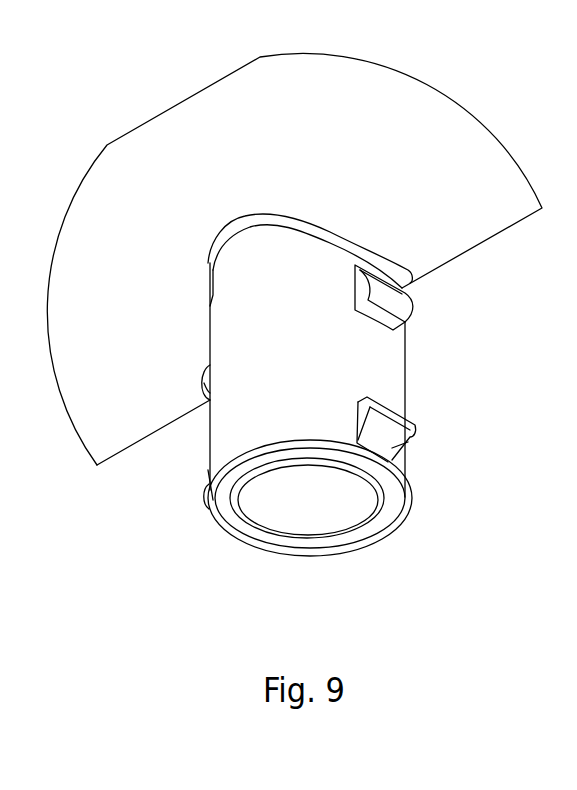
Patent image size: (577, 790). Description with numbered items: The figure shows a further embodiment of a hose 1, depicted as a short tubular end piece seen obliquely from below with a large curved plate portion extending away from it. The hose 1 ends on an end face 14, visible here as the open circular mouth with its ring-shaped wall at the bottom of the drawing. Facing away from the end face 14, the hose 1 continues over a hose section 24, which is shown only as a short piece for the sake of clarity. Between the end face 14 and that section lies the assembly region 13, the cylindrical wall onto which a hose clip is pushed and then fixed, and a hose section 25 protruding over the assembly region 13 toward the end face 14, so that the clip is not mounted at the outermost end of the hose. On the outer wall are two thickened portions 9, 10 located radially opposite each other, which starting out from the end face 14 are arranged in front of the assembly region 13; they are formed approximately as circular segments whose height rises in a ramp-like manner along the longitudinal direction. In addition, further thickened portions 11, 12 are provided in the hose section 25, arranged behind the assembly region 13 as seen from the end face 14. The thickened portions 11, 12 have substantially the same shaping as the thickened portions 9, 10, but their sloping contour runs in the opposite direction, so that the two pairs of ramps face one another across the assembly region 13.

The hose 1 is at (173, 142).
The thickened portion 9 is at (392, 448).
The thickened portion 10 is at (205, 495).
The further thickened portion 11 is at (405, 312).
The further thickened portion 12 is at (200, 388).
The assembly region 13 is at (393, 375).
The end face 14 is at (380, 535).
The hose section 24 is at (232, 262).
The hose section 25 is at (232, 453).